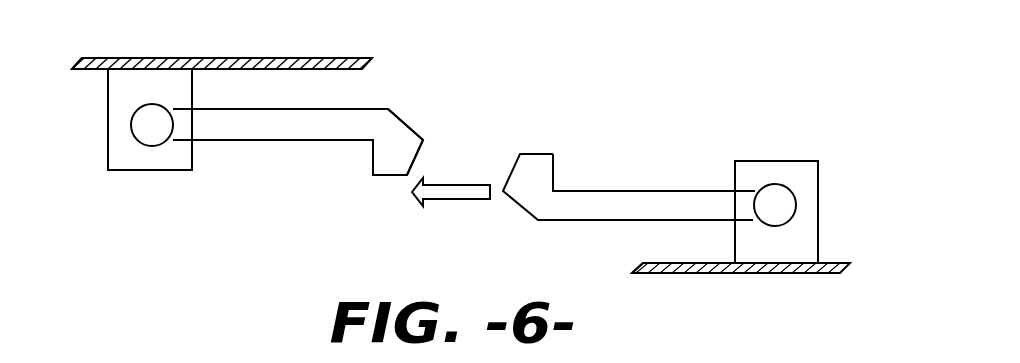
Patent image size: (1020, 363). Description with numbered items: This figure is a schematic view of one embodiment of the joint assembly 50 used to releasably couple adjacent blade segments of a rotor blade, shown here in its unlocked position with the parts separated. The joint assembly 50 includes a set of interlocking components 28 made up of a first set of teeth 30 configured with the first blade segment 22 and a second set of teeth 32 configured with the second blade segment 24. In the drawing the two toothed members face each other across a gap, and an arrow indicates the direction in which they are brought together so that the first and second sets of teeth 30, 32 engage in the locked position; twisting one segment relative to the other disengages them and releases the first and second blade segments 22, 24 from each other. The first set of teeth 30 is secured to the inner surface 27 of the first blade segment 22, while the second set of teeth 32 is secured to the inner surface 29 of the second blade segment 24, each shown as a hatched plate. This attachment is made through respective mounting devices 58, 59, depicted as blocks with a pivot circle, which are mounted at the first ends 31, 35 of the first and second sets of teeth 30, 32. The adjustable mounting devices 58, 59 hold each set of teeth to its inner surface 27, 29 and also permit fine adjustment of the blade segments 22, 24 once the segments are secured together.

The first blade segment 22 is at (93, 73).
The second blade segment 24 is at (790, 275).
The inner surface of the first blade segment 27 is at (331, 70).
The interlocking components 28 is at (240, 143).
The inner surface of the second blade segment 29 is at (832, 262).
The first set of teeth 30 is at (320, 128).
The first end of the first set of teeth 31 is at (183, 118).
The second set of teeth 32 is at (652, 205).
The first end of the second set of teeth 35 is at (742, 205).
The joint assembly 50 is at (547, 84).
The mounting device 58 is at (127, 172).
The mounting device 59 is at (818, 178).